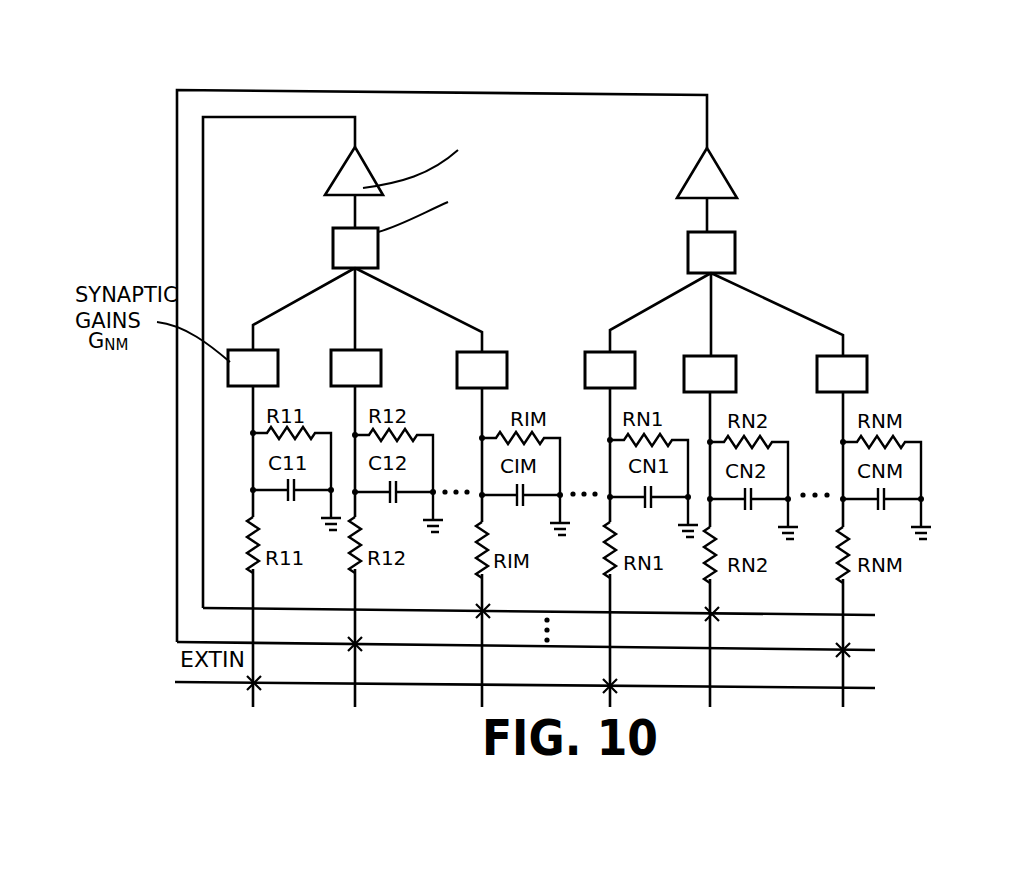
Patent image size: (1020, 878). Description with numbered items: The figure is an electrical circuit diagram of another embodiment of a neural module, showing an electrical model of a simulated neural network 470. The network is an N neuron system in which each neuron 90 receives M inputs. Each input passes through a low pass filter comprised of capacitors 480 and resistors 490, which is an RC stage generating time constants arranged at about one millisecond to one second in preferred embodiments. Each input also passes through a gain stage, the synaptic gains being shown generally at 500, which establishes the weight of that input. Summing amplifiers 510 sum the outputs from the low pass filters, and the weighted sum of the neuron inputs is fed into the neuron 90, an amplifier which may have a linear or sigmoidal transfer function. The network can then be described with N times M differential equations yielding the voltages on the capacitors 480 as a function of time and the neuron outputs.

The simulated neural network 470 is at (413, 321).
The neuron 90 is at (533, 181).
The summing amplifiers 510 is at (563, 228).
The synaptic gains 500 is at (547, 365).
The resistors 490 is at (225, 427).
The capacitors 480 is at (283, 498).